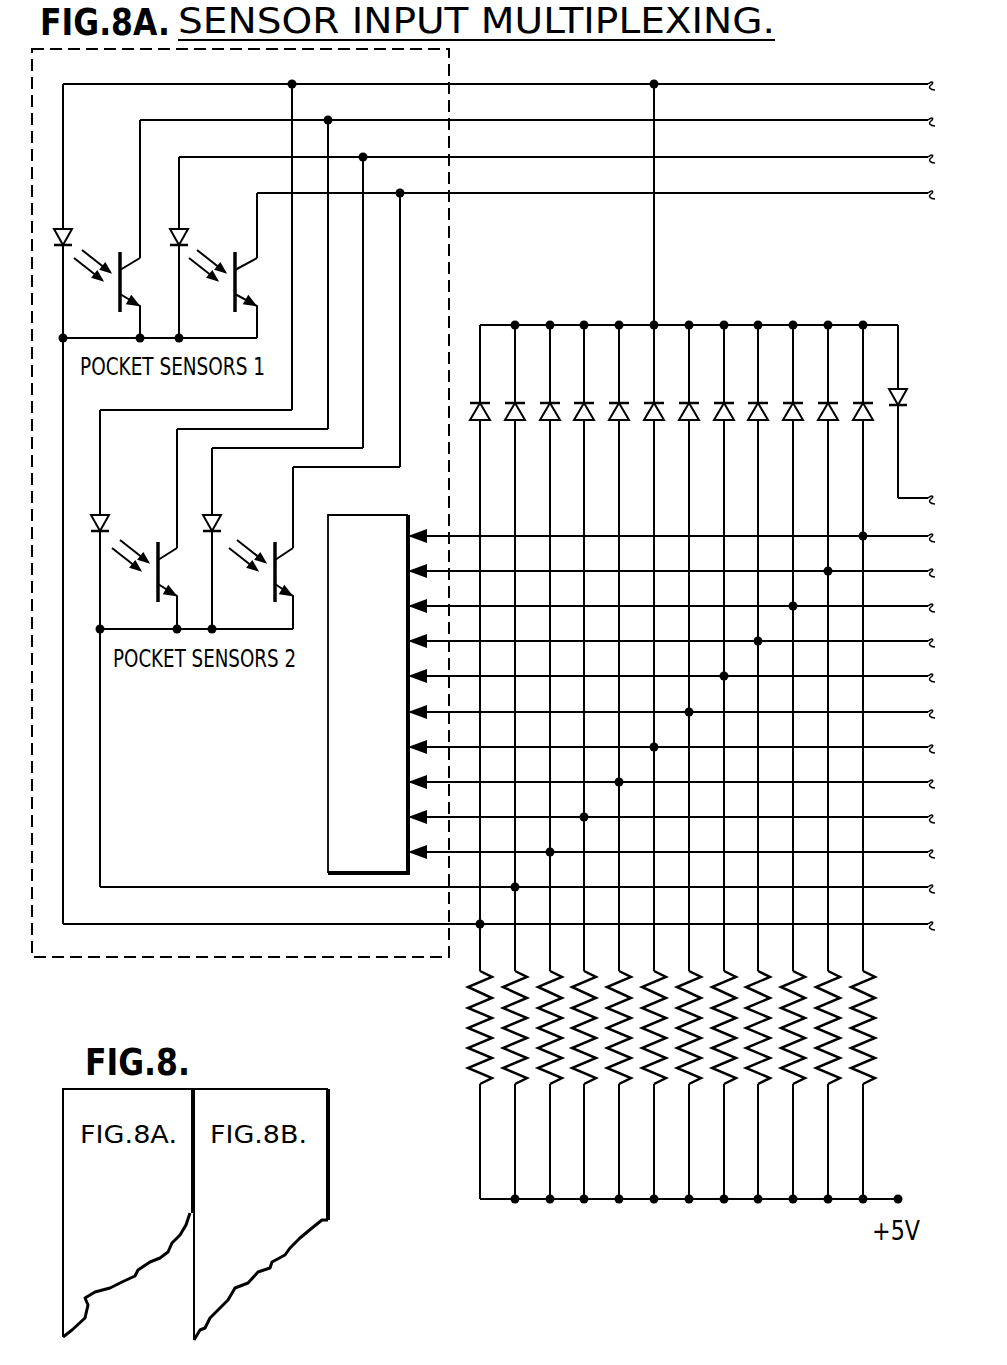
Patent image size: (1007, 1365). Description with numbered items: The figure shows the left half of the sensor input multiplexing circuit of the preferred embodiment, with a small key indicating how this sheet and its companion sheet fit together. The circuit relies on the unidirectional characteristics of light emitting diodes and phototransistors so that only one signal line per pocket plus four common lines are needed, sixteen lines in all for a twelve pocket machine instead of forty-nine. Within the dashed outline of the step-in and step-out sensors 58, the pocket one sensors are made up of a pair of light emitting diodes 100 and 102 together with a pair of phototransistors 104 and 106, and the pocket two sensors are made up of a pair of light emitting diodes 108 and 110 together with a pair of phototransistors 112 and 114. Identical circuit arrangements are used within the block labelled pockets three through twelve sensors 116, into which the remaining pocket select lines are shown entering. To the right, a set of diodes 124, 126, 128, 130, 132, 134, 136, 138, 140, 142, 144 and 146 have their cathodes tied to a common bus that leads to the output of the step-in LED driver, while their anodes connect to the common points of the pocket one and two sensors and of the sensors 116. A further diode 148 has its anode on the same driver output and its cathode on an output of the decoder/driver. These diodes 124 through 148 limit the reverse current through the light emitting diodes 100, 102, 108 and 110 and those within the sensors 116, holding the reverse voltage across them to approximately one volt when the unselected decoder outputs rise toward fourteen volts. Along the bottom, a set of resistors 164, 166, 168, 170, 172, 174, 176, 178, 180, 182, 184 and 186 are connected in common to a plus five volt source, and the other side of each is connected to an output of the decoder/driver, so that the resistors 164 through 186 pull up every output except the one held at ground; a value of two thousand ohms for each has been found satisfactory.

The step-in and step-out sensors 58 is at (331, 961).
The light emitting diode 100 is at (70, 232).
The light emitting diode 102 is at (186, 232).
The phototransistor 104 is at (127, 290).
The phototransistor 106 is at (243, 290).
The light emitting diode 108 is at (104, 520).
The light emitting diode 110 is at (216, 520).
The phototransistor 112 is at (163, 576).
The phototransistor 114 is at (280, 576).
The pockets 3-12 sensors 116 is at (328, 829).
The diode 124 is at (483, 424).
The diode 126 is at (523, 410).
The diode 128 is at (553, 424).
The diode 130 is at (592, 410).
The diode 132 is at (622, 424).
The diode 134 is at (662, 410).
The diode 136 is at (692, 424).
The diode 138 is at (732, 410).
The diode 140 is at (761, 424).
The diode 142 is at (801, 410).
The diode 144 is at (831, 424).
The diode 146 is at (871, 410).
The diode 148 is at (907, 399).
The resistor 164 is at (478, 1086).
The resistor 166 is at (513, 1086).
The resistor 168 is at (548, 1086).
The resistor 170 is at (582, 1086).
The resistor 172 is at (617, 1086).
The resistor 174 is at (652, 1086).
The resistor 176 is at (687, 1086).
The resistor 178 is at (722, 1086).
The resistor 180 is at (756, 1086).
The resistor 182 is at (791, 1086).
The resistor 184 is at (826, 1086).
The resistor 186 is at (861, 1086).